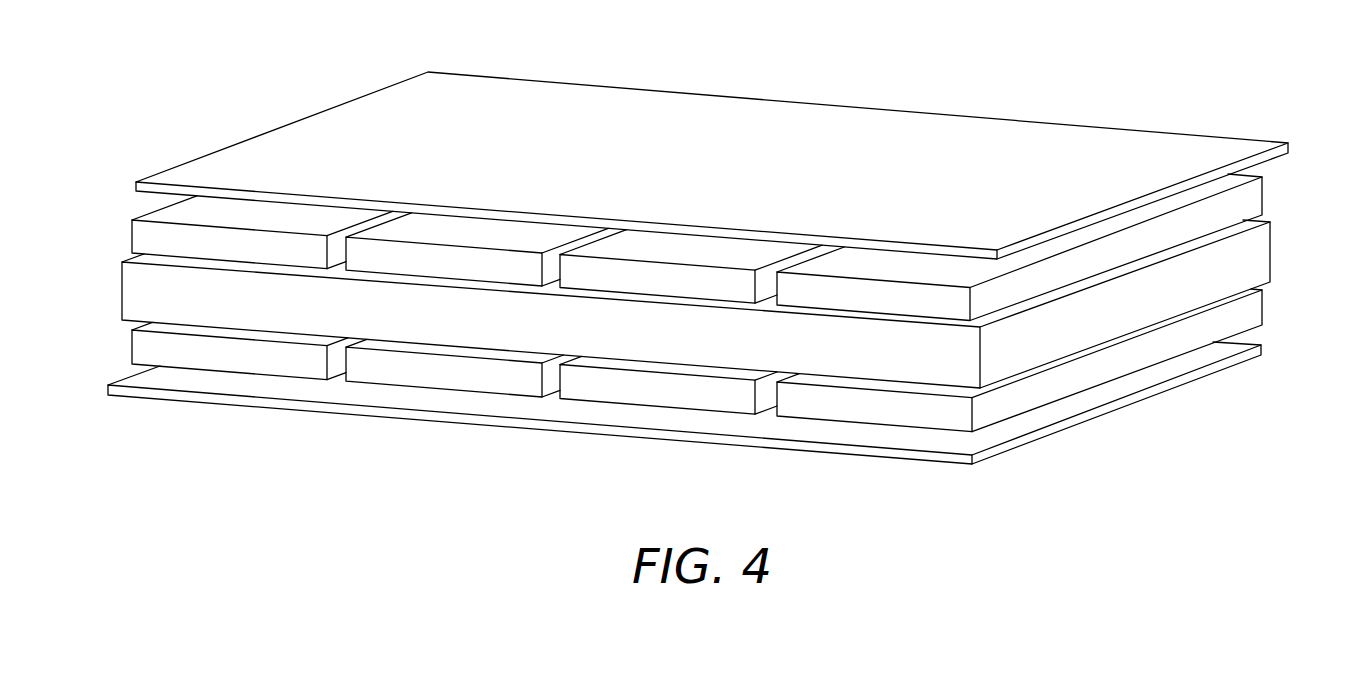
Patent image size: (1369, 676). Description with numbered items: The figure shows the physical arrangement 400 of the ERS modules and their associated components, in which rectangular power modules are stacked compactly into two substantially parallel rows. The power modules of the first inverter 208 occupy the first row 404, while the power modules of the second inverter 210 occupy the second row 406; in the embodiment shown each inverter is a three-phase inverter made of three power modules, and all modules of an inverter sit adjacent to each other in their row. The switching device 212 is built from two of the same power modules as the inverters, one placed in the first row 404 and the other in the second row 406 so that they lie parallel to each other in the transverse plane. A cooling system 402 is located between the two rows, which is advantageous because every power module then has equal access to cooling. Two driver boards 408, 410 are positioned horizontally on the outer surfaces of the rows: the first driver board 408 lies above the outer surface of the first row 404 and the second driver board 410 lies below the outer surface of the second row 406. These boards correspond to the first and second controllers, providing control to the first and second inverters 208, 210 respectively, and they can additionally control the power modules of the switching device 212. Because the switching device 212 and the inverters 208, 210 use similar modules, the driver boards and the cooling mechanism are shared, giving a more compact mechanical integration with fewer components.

The physical arrangement 400 is at (226, 83).
The cooling system 402 is at (1260, 258).
The first row 404 is at (275, 248).
The second row 406 is at (232, 357).
The first driver board 408 is at (1120, 140).
The second driver board 410 is at (1128, 397).
The first inverter 208 is at (442, 258).
The second inverter 210 is at (433, 373).
The switching device 212 is at (662, 328).